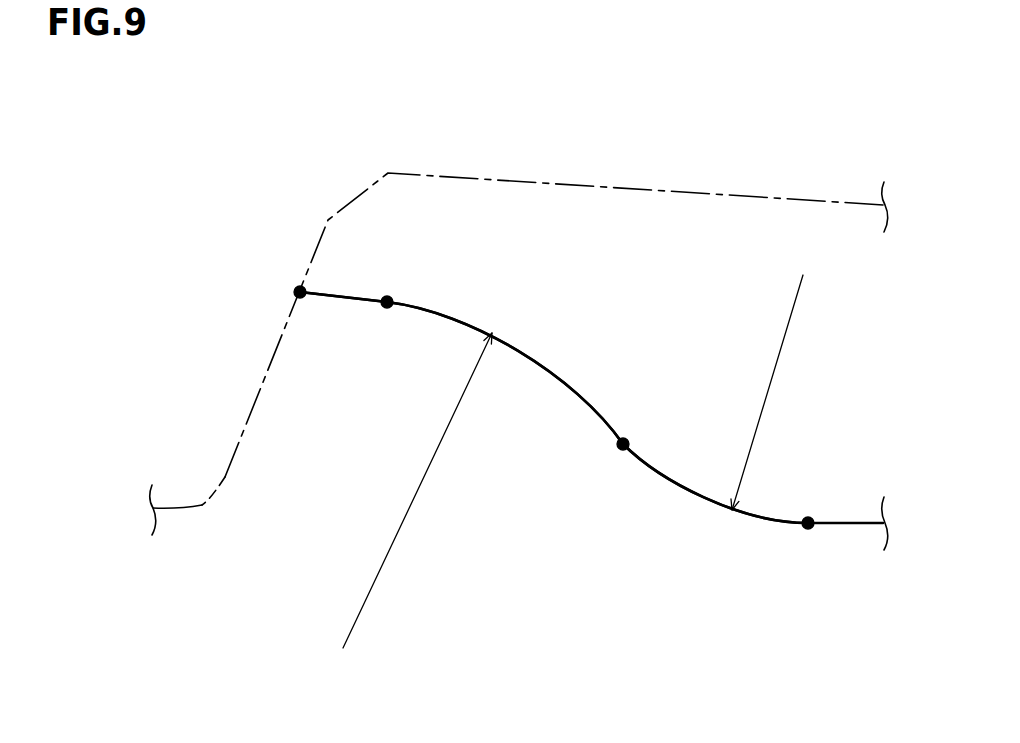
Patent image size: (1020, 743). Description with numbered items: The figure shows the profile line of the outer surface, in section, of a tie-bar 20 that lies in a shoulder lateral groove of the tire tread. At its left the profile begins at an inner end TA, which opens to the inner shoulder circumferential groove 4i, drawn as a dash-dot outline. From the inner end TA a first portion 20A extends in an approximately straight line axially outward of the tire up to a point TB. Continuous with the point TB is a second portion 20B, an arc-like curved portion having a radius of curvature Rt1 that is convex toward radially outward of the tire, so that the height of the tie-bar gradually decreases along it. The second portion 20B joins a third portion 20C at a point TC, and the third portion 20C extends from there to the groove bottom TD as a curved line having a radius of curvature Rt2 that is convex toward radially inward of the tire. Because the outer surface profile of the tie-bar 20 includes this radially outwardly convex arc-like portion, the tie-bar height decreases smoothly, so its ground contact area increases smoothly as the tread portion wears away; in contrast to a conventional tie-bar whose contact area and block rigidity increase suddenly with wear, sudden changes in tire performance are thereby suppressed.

The inner shoulder circumferential groove 4i is at (200, 419).
The tie-bar 20 is at (568, 363).
The first portion 20A is at (348, 288).
The second portion 20B is at (468, 317).
The third portion 20C is at (678, 483).
The inner end TA is at (277, 288).
The point TB is at (405, 290).
The point TC is at (602, 451).
The groove bottom TD is at (809, 541).
The radius of curvature Rt1 is at (402, 513).
The radius of curvature Rt2 is at (781, 381).